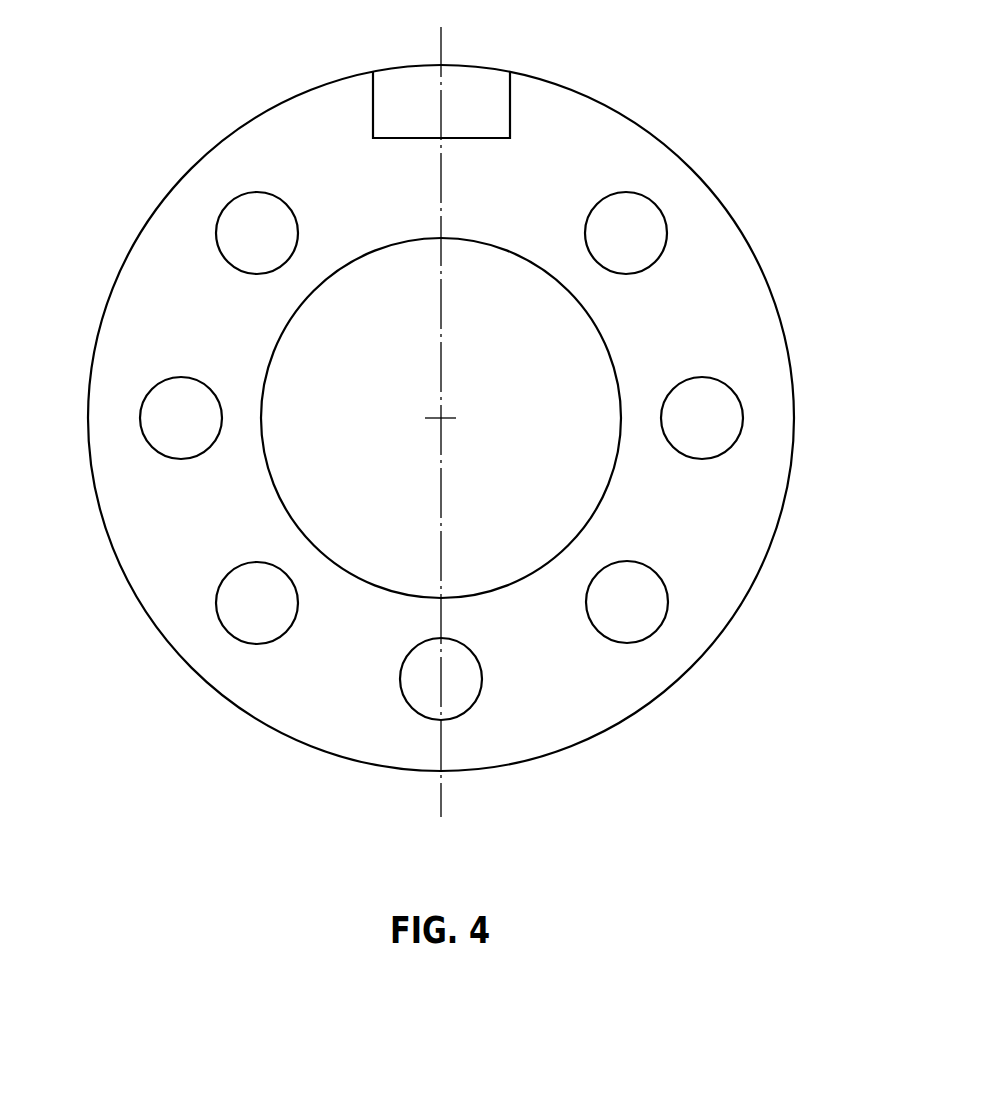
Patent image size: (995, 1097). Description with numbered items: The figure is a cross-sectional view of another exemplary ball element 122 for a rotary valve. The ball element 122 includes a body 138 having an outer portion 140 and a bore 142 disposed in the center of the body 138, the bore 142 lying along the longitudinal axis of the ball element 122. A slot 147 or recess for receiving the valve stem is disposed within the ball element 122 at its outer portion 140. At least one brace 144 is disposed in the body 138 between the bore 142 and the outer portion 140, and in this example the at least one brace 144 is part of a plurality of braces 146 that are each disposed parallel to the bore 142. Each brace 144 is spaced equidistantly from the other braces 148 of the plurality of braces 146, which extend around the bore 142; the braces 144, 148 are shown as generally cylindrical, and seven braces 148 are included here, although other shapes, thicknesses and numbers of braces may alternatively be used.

The ball element 122 is at (122, 118).
The body 138 is at (140, 512).
The outer portion 140 is at (160, 637).
The bore 142 is at (391, 548).
The brace 144 is at (251, 662).
The plurality of braces 146 is at (648, 664).
The slot 147 is at (373, 107).
The braces 148 is at (630, 192).